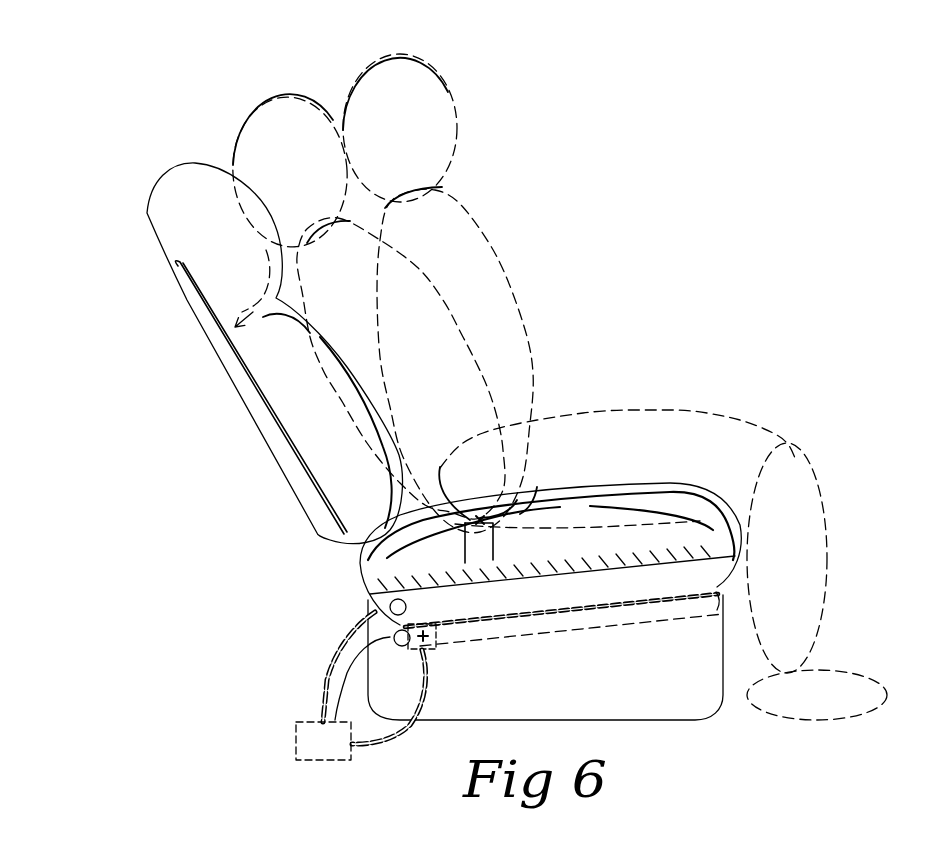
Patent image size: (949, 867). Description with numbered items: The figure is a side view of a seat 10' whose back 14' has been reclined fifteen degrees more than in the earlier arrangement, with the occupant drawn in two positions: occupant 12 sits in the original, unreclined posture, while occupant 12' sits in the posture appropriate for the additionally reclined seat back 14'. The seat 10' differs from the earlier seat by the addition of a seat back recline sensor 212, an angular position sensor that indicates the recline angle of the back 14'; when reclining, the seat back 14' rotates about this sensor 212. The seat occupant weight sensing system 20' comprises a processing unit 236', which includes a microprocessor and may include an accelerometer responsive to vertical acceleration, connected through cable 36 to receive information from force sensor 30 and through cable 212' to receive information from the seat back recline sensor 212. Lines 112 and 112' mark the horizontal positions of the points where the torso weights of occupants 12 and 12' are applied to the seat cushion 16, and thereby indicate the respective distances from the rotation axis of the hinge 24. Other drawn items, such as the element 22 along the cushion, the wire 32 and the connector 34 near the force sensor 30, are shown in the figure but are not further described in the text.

The seat 10' is at (274, 373).
The occupant 12 is at (615, 387).
The occupant 12' is at (366, 277).
The seat back 14' is at (431, 468).
The seat cushion 16 is at (583, 483).
The seat occupant weight sensing system 20' is at (472, 657).
The sensor strip 22 is at (503, 614).
The hinge 24 is at (702, 598).
The force sensor 30 is at (415, 641).
The wire 32 is at (362, 678).
The connector 34 is at (432, 648).
The cable 36 is at (370, 745).
The line 112 is at (508, 538).
The line 112' is at (435, 551).
The seat back recline sensor 212 is at (429, 603).
The cable 212' is at (333, 661).
The processing unit 236' is at (323, 741).